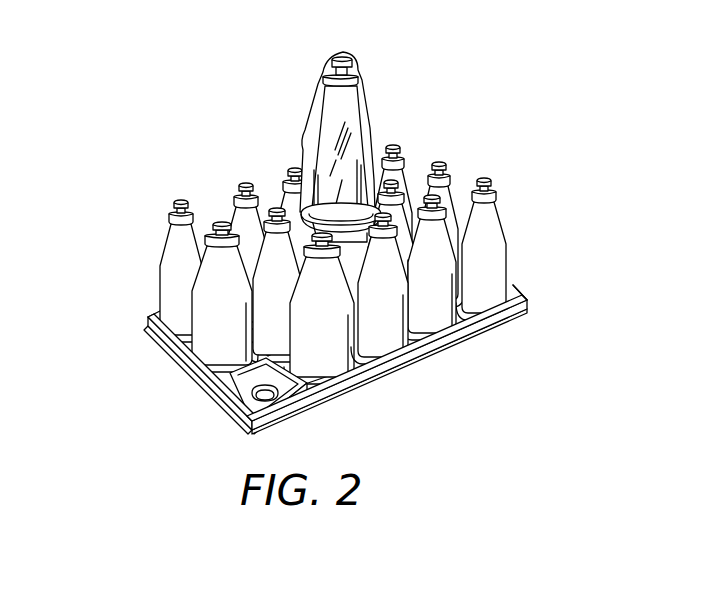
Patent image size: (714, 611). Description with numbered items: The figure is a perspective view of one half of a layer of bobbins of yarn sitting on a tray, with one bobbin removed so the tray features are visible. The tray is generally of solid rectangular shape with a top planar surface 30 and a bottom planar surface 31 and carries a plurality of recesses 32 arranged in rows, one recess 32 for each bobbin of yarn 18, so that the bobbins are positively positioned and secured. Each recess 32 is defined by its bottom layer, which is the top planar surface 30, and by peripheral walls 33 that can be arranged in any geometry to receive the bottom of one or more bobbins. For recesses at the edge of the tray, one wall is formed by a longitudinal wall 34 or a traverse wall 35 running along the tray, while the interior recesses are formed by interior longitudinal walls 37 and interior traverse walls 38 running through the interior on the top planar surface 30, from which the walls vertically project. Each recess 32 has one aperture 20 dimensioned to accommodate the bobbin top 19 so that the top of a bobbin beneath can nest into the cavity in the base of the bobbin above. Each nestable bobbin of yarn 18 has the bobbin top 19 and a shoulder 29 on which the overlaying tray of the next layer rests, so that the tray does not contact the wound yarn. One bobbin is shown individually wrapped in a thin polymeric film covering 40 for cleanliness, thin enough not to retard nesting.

The bobbin of yarn 18 is at (172, 250).
The bobbin top 19 is at (198, 212).
The aperture 20 is at (272, 397).
The shoulder 29 is at (488, 192).
The top planar surface 30 is at (245, 388).
The bottom planar surface 31 is at (240, 417).
The recess 32 is at (367, 363).
The peripheral walls 33 is at (522, 287).
The longitudinal wall 34 is at (152, 317).
The traverse wall 35 is at (158, 343).
The interior longitudinal walls 37 is at (210, 385).
The interior traverse walls 38 is at (283, 400).
The film covering 40 is at (313, 112).